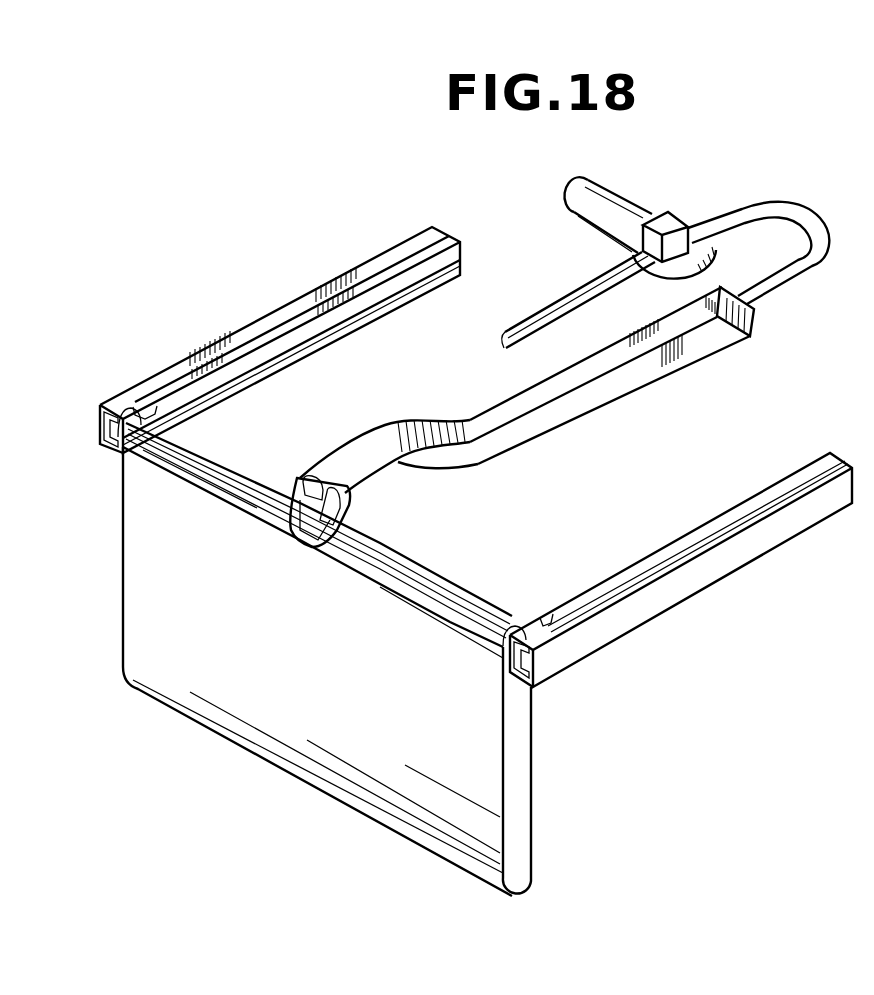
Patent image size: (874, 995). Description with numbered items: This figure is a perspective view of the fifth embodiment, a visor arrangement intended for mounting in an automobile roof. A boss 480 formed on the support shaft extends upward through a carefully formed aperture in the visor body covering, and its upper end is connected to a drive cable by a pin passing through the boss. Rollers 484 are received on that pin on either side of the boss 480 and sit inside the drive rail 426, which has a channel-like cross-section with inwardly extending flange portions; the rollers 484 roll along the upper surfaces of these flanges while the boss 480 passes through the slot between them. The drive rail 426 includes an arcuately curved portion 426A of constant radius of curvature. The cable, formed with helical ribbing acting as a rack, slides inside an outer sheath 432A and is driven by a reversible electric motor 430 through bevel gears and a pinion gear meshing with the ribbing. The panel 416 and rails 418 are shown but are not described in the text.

The panel 416 is at (531, 707).
The support rail 418 is at (296, 312).
The drive rail 426 is at (600, 400).
The arcuately curved portion 426A is at (390, 430).
The reversible electric motor 430 is at (580, 205).
The sheath 432A is at (833, 187).
The boss 480 is at (307, 508).
The rollers 484 is at (300, 480).